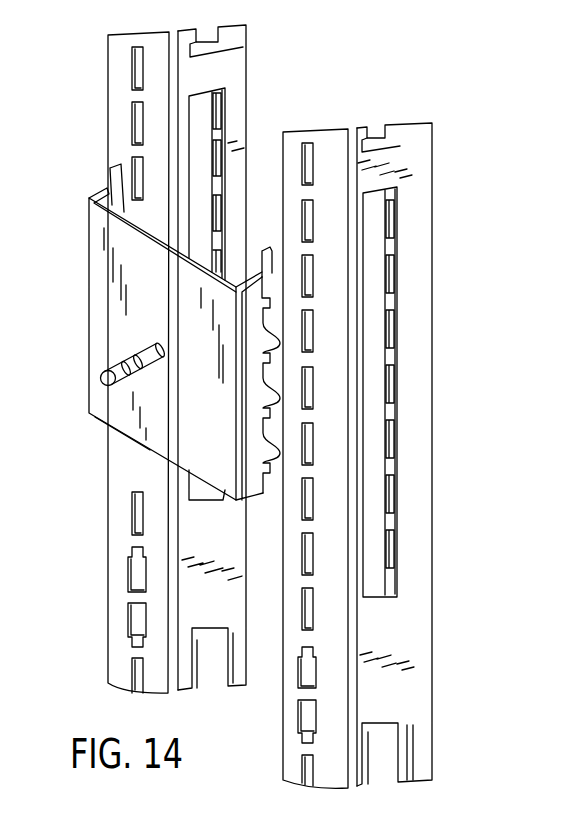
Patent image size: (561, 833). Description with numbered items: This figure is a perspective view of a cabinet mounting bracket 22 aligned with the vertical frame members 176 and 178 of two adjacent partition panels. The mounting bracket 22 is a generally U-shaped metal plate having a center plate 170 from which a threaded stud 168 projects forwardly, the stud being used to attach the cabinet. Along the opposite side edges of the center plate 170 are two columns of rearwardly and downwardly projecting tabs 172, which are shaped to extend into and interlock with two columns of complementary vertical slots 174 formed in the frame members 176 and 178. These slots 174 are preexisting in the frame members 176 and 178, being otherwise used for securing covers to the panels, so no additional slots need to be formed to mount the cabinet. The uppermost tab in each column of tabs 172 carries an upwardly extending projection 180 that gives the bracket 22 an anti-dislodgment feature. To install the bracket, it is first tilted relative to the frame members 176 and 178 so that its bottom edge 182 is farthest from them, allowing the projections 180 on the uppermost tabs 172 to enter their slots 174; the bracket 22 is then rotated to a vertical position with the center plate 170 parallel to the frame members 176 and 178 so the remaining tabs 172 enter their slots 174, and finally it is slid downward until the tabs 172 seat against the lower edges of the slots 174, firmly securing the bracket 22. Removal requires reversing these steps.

The mounting bracket 22 is at (88, 227).
The threaded stud 168 is at (112, 370).
The center plate 170 is at (118, 393).
The tabs 172 is at (94, 188).
The vertical slots 174 is at (130, 118).
The vertical frame member 176 is at (248, 61).
The vertical frame member 178 is at (433, 162).
The upwardly extending projection 180 is at (117, 165).
The bottom edge 182 is at (128, 436).